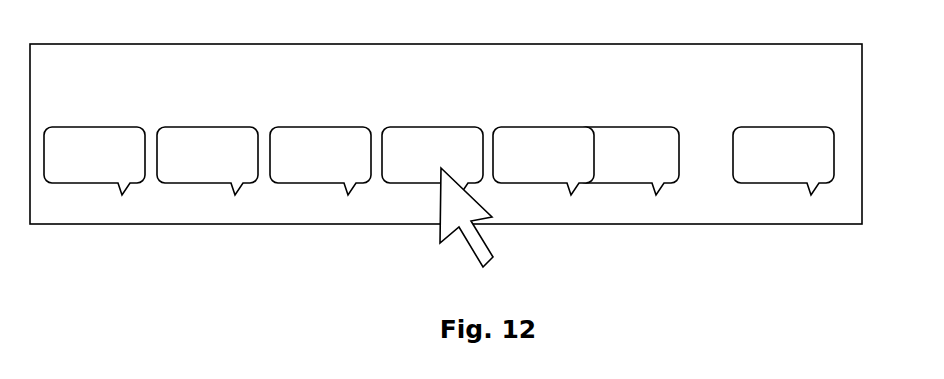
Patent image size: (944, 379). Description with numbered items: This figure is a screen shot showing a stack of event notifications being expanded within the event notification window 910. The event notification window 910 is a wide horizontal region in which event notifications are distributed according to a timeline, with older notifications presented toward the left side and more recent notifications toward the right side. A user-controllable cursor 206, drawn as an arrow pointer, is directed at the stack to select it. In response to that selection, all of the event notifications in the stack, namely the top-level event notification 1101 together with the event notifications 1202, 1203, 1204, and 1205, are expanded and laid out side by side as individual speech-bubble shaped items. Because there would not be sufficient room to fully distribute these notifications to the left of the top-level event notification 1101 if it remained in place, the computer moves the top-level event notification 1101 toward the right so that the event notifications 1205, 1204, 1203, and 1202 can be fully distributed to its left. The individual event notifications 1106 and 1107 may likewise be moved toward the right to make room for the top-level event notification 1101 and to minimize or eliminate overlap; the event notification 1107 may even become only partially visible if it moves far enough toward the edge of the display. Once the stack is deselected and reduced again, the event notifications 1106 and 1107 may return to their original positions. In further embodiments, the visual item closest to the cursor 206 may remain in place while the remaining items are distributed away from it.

The event notification window 910 is at (267, 224).
The cursor 206 is at (486, 247).
The event notification 1205 is at (118, 170).
The event notification 1204 is at (184, 170).
The event notification 1203 is at (344, 170).
The event notification 1202 is at (456, 170).
The top-level event notification 1101 is at (520, 170).
The event notification 1106 is at (652, 170).
The event notification 1107 is at (760, 170).